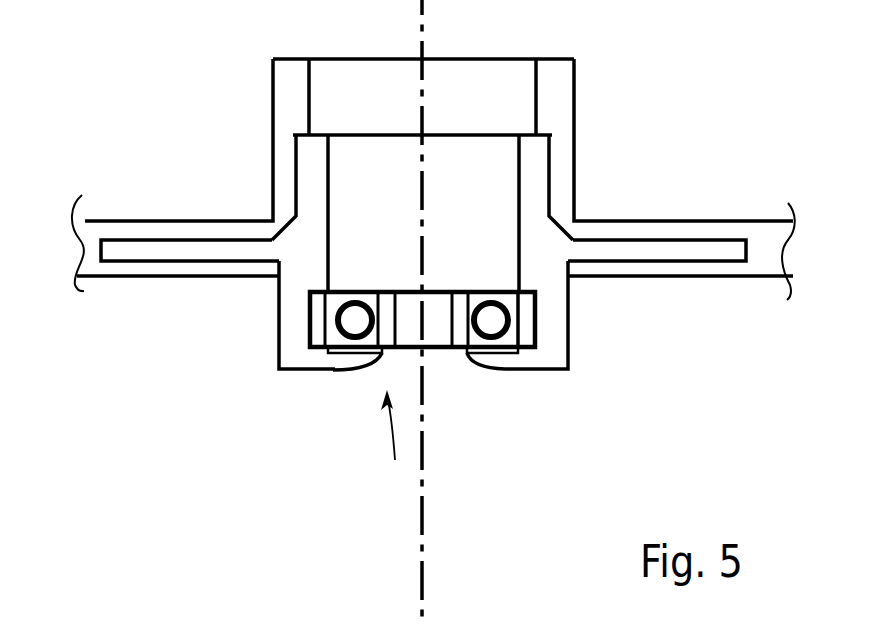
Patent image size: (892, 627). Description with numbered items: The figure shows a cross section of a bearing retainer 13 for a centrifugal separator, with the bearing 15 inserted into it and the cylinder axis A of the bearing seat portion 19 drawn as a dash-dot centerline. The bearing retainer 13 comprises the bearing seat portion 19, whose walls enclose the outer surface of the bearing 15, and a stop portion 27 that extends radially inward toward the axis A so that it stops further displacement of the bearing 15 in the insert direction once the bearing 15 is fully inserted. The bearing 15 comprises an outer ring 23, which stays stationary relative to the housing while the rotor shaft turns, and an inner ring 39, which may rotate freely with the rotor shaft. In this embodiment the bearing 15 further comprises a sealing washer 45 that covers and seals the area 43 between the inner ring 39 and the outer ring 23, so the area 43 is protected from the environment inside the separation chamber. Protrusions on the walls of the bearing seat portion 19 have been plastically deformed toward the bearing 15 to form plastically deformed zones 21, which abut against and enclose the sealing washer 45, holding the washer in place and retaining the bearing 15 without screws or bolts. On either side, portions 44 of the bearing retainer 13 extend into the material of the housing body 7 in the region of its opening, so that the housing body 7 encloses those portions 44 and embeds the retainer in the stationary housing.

The housing body 7 is at (682, 227).
The bearing retainer 13 is at (303, 240).
The bearing 15 is at (392, 447).
The bearing seat portion 19 is at (288, 343).
The plastically deformed zones 21 is at (338, 362).
The outer ring 23 is at (523, 338).
The stop portion 27 is at (528, 297).
The inner ring 39 is at (460, 338).
The area 43 is at (495, 353).
The portions of the bearing retainer 44 is at (143, 250).
The sealing washer 45 is at (507, 350).
The cylinder axis A is at (423, 593).